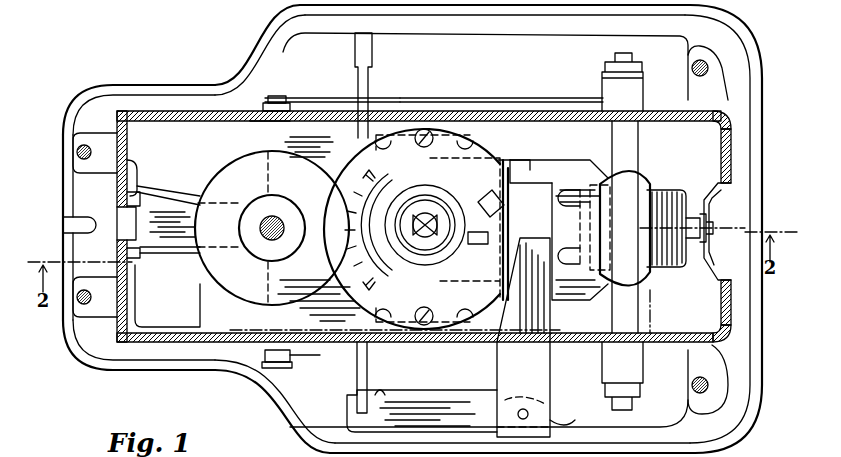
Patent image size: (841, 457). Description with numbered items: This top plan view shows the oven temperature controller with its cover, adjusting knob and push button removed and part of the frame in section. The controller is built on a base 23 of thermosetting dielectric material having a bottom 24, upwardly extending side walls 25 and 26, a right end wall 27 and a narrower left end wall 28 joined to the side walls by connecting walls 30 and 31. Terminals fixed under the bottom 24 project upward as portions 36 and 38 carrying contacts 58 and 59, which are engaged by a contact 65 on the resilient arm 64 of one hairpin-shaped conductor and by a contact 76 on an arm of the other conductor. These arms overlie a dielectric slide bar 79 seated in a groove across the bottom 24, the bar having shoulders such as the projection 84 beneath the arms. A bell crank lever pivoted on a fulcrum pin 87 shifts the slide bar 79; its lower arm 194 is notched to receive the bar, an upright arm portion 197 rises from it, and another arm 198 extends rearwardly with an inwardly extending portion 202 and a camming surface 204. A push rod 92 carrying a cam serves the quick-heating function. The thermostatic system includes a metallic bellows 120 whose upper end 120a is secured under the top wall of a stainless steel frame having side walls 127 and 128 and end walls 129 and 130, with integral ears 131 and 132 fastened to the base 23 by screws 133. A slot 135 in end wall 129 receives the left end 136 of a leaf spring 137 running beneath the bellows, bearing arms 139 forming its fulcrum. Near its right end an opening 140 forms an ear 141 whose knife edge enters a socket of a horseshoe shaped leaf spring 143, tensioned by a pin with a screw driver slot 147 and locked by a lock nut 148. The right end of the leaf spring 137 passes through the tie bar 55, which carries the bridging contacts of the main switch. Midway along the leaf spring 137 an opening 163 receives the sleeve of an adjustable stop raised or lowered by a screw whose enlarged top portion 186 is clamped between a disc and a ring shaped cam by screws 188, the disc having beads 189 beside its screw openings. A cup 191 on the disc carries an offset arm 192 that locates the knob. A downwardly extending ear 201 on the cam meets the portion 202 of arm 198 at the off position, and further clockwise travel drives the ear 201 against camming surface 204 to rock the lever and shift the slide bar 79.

The base 23 is at (108, 370).
The bottom 24 is at (457, 43).
The side wall 25 is at (278, 46).
The side wall 26 is at (292, 428).
The right end wall 27 is at (748, 160).
The left end wall 28 is at (117, 313).
The connecting wall 30 is at (244, 91).
The connecting wall 31 is at (269, 389).
The upwardly extending portion 36 is at (291, 100).
The upwardly extending portion 38 is at (292, 362).
The tie bar 55 is at (631, 145).
The contact 58 is at (272, 122).
The contact 59 is at (281, 369).
The resilient arm 64 is at (498, 100).
The contact 65 is at (278, 96).
The contact 76 is at (250, 333).
The slide bar 79 is at (371, 82).
The projection 84 is at (357, 368).
The fulcrum pin 87 is at (528, 412).
The push rod 92 is at (425, 214).
The metallic bellows 120 is at (246, 300).
The upper end of bellows 120a is at (290, 261).
The side wall 127 is at (216, 122).
The side wall 128 is at (160, 333).
The left end wall 129 is at (128, 160).
The right end wall 130 is at (721, 155).
The ear 131 is at (78, 136).
The ear 132 is at (714, 372).
The screws 133 is at (77, 152).
The slot 135 is at (118, 212).
The left end of leaf spring 136 is at (126, 238).
The leaf spring 137 is at (155, 254).
The bearing arms 139 is at (137, 172).
The opening 140 is at (584, 182).
The ear 141 is at (572, 199).
The horseshoe shaped leaf spring 143 is at (651, 194).
The screw driver slot 147 is at (736, 230).
The lock nut 148 is at (722, 216).
The opening 163 is at (526, 172).
The enlarged top portion 186 is at (334, 206).
The screws 188 is at (418, 146).
The beads 189 is at (473, 140).
The cup 191 is at (441, 195).
The arm 192 is at (504, 208).
The lower arm 194 is at (400, 395).
The upright arm portion 197 is at (381, 393).
The arm 198 is at (543, 311).
The ear 201 is at (505, 288).
The inwardly extending portion 202 is at (506, 262).
The camming surface 204 is at (546, 184).